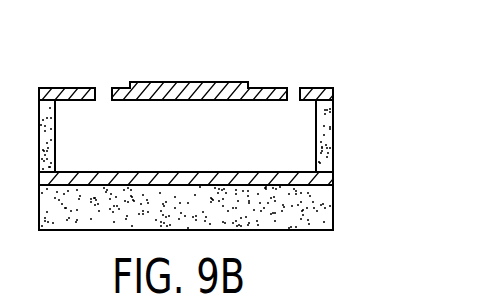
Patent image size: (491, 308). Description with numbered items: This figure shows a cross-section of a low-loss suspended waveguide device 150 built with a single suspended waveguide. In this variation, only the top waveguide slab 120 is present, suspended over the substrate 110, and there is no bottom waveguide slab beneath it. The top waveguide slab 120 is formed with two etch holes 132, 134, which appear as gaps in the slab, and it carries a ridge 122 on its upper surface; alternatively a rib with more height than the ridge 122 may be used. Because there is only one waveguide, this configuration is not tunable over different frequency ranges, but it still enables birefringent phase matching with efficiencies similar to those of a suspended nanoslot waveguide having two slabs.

The substrate 110 is at (333, 215).
The top waveguide slab 120 is at (318, 93).
The ridge 122 is at (212, 82).
The etch hole 132 is at (290, 92).
The etch hole 134 is at (104, 92).
The device assembly 150 is at (233, 127).